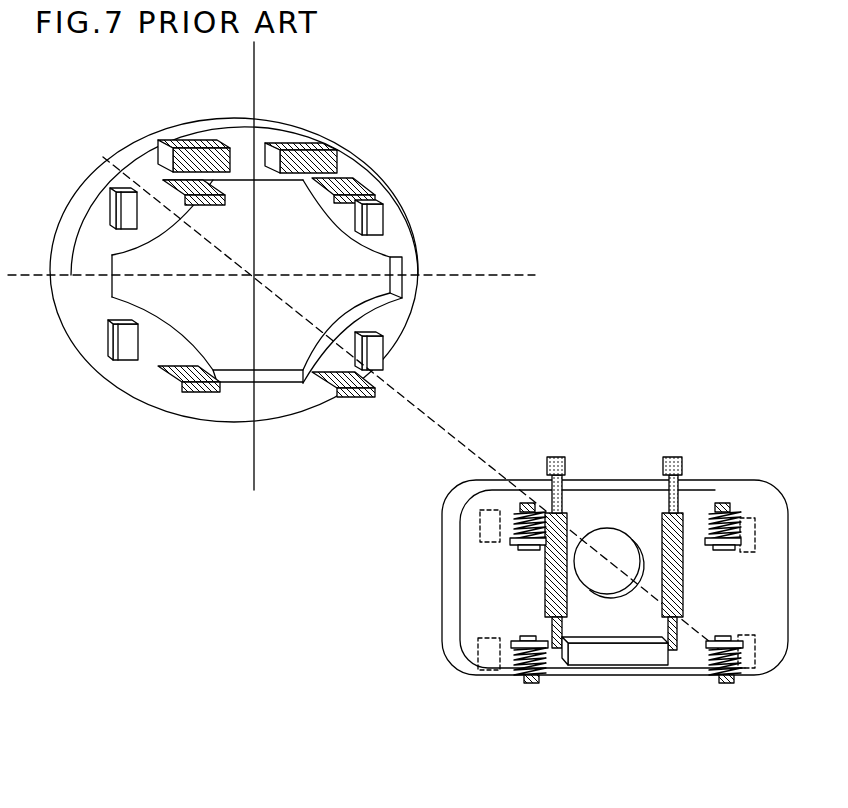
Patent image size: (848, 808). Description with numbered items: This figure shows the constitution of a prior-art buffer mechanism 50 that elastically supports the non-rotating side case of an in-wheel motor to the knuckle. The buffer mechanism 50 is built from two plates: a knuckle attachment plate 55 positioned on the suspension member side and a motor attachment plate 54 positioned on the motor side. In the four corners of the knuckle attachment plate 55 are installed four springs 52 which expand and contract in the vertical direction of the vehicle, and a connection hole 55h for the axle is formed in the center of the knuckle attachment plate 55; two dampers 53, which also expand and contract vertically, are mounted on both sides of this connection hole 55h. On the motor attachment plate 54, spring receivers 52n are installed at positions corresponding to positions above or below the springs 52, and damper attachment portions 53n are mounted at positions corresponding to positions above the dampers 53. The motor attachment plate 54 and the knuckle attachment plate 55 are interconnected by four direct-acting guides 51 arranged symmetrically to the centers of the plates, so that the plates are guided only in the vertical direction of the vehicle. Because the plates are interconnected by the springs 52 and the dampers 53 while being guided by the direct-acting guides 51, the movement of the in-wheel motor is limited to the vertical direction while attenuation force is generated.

The buffer mechanism 50 is at (546, 352).
The direct-acting guide 51 is at (128, 213).
The spring receiver 52n is at (178, 187).
The damper attachment portion 53n is at (200, 148).
The motor attachment plate 54 is at (393, 312).
The knuckle attachment plate 55 is at (478, 558).
The connection hole 55h is at (607, 547).
The damper 53 is at (563, 481).
The spring 52 is at (520, 510).